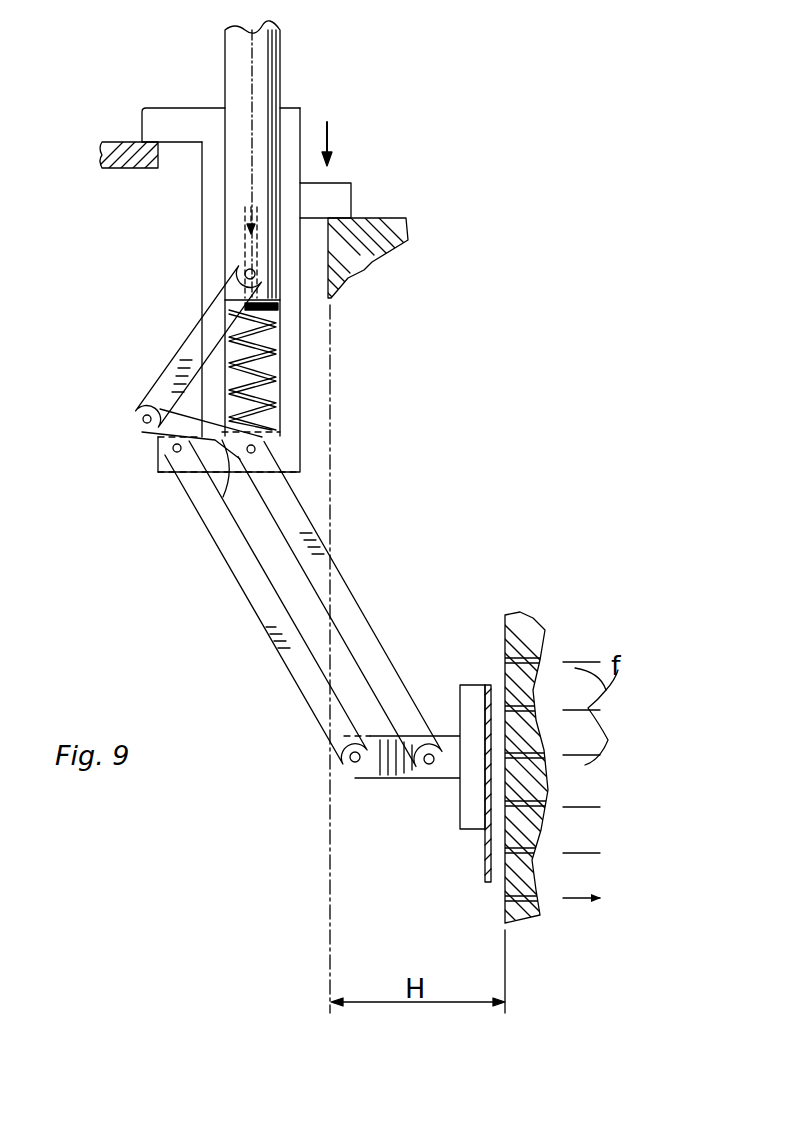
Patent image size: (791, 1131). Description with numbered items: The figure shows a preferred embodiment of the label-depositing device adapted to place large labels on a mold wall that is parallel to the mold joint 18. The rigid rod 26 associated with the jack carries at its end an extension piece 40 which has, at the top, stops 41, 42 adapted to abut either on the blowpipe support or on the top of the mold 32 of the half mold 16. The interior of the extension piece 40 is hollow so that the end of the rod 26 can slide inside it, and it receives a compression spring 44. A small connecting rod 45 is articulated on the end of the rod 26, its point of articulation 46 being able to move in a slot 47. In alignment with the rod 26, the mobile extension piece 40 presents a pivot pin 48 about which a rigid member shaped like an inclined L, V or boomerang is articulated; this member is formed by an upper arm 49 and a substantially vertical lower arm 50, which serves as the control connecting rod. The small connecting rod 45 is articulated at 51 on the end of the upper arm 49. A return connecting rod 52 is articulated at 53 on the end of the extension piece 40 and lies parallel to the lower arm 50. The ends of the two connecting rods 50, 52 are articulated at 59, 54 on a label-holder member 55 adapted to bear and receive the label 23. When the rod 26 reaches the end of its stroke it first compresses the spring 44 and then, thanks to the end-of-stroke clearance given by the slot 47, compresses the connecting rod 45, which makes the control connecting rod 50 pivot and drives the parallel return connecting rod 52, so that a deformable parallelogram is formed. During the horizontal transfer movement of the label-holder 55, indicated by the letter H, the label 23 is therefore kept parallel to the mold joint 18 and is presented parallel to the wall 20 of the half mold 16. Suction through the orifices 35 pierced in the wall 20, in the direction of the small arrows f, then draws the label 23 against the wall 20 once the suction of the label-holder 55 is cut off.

The half mold 16 is at (516, 878).
The mold joint 18 is at (328, 839).
The wall 20 is at (502, 630).
The label 23 is at (484, 860).
The rigid rod 26 is at (265, 51).
The top of the mold 32 is at (390, 212).
The suction orifices 35 is at (524, 704).
The extension piece 40 is at (290, 337).
The stop 41 is at (155, 108).
The stop 42 is at (337, 193).
The compression spring 44 is at (262, 362).
The small connecting rod 45 is at (178, 362).
The point of articulation 46 is at (246, 272).
The slot 47 is at (248, 230).
The pivot pin 48 is at (256, 449).
The upper arm 49 is at (223, 497).
The lower arm 50 is at (345, 602).
The articulation 51 is at (132, 412).
The return connecting rod 52 is at (237, 553).
The articulation 53 is at (173, 449).
The articulation 54 is at (432, 772).
The label-holder member 55 is at (470, 690).
The articulation 59 is at (361, 770).